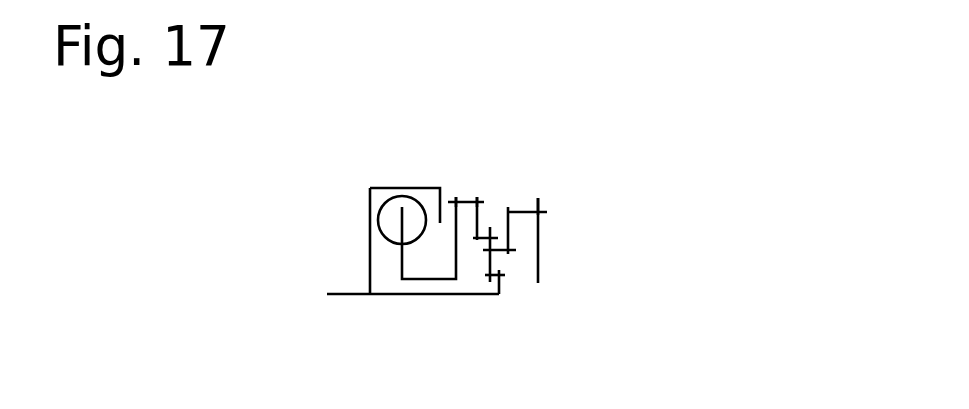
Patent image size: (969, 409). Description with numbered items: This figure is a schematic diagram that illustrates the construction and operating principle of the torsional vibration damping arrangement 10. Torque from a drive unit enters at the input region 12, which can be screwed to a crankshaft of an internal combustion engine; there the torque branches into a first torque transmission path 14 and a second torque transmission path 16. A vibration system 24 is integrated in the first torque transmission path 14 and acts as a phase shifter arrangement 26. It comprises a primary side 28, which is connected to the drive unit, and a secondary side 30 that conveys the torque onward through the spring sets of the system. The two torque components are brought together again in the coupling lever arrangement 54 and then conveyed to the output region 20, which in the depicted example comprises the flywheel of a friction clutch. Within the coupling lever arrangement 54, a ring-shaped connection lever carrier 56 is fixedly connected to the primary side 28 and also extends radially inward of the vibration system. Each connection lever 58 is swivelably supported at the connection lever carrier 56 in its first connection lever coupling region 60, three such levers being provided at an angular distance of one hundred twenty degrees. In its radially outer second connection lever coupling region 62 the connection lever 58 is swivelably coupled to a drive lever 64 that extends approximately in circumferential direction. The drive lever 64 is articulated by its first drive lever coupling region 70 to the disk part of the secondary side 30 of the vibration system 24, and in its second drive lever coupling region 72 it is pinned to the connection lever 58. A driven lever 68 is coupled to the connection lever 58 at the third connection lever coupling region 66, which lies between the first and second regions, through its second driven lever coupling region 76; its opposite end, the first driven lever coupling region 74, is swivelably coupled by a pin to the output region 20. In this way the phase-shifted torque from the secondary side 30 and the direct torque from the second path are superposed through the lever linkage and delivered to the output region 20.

The torsional vibration damping arrangement 10 is at (720, 65).
The input region 12 is at (328, 308).
The first torque transmission path 14 is at (363, 212).
The second torque transmission path 16 is at (391, 294).
The output region 20 is at (540, 273).
The vibration system 24 is at (410, 130).
The phase shifter arrangement 26 is at (302, 110).
The primary side 28 is at (372, 188).
The secondary side 30 is at (423, 280).
The coupling lever arrangement 54 is at (497, 137).
The connection lever carrier 56 is at (498, 296).
The connection lever 58 is at (490, 264).
The first connection lever coupling region 60 is at (469, 281).
The second connection lever coupling region 62 is at (495, 225).
The drive lever 64 is at (480, 213).
The third connection lever coupling region 66 is at (517, 275).
The driven lever 68 is at (547, 212).
The first drive lever coupling region 70 is at (465, 188).
The second drive lever coupling region 72 is at (433, 248).
The first driven lever coupling region 74 is at (537, 192).
The second driven lever coupling region 76 is at (544, 247).